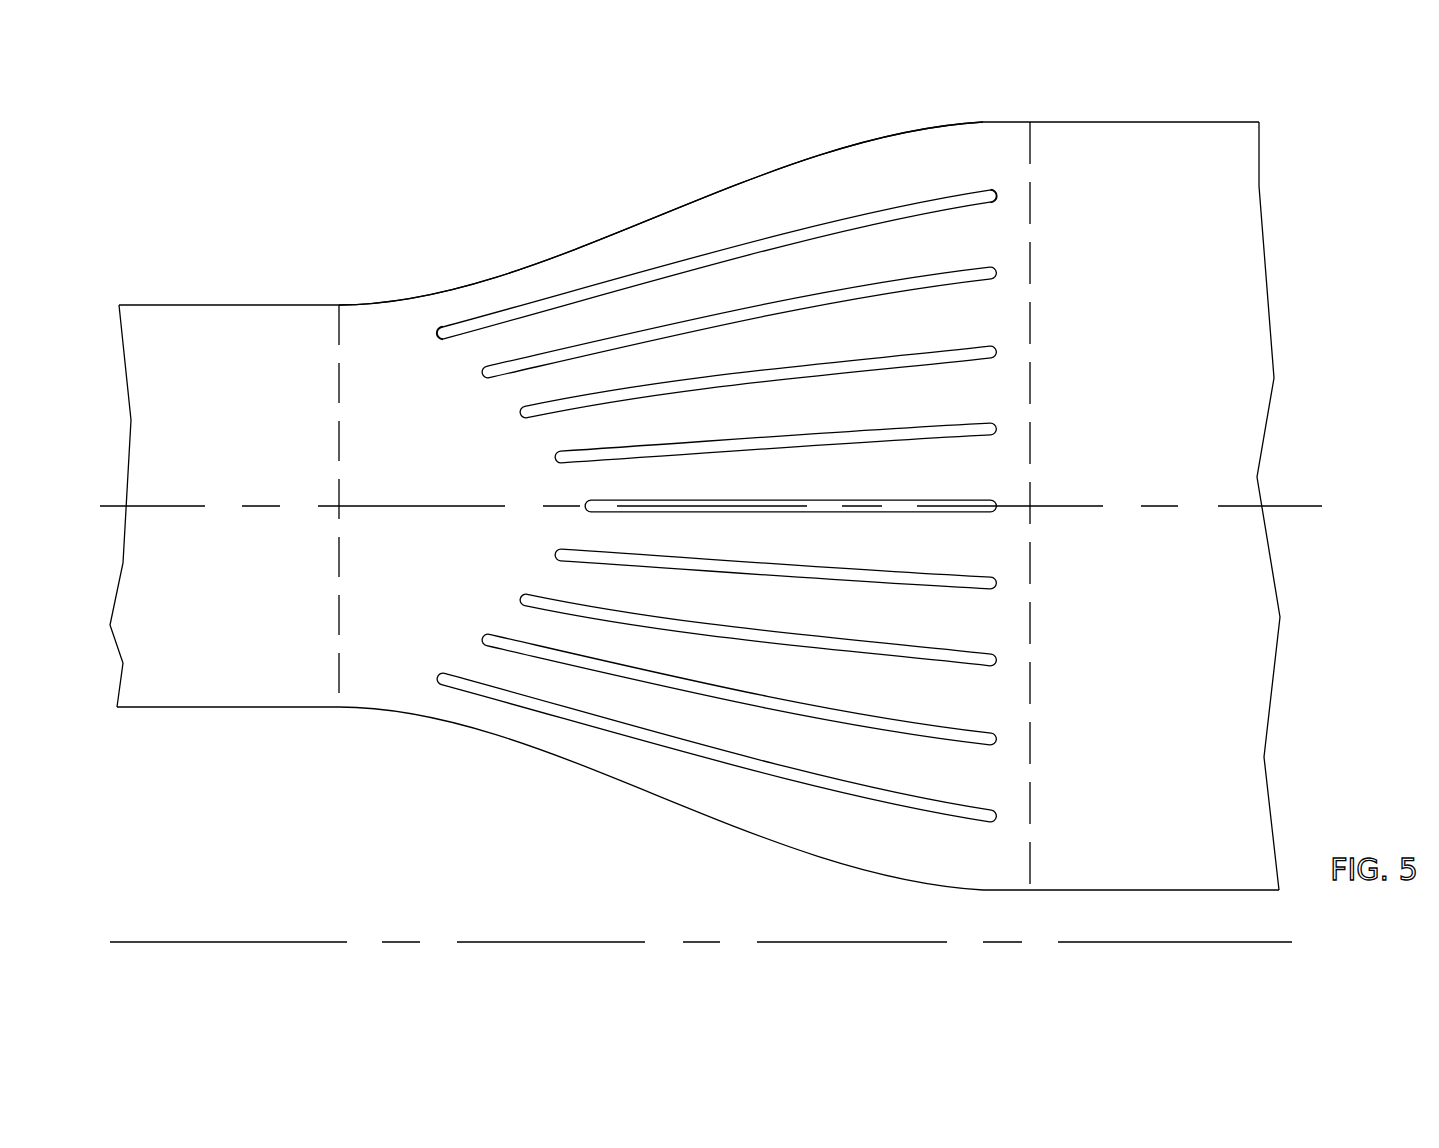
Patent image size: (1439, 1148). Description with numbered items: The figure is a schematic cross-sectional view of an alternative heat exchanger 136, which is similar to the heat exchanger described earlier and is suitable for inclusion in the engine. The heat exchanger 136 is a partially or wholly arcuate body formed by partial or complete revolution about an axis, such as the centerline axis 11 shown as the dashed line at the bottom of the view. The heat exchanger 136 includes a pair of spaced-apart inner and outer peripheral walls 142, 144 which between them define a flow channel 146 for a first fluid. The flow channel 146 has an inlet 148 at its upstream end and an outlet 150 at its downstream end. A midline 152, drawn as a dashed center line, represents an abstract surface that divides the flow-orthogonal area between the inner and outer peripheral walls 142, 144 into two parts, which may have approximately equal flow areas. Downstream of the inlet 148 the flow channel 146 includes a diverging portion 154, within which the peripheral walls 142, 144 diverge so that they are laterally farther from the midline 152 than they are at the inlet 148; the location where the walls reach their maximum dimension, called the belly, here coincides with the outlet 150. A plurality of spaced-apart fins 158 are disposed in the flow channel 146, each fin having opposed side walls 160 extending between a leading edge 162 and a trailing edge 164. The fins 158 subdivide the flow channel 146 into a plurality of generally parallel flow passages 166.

The centerline axis 11 is at (333, 942).
The heat exchanger 136 is at (705, 89).
The inner peripheral wall 142 is at (596, 772).
The outer peripheral wall 144 is at (510, 273).
The flow channel 146 is at (431, 446).
The inlet 148 is at (339, 293).
The outlet 150 is at (1030, 110).
The midline 152 is at (158, 506).
The diverging portion 154 is at (672, 196).
The fins 158 is at (682, 465).
The side walls 160 is at (980, 190).
The leading edge 162 is at (436, 333).
The trailing edge 164 is at (1002, 200).
The flow passages 166 is at (682, 260).